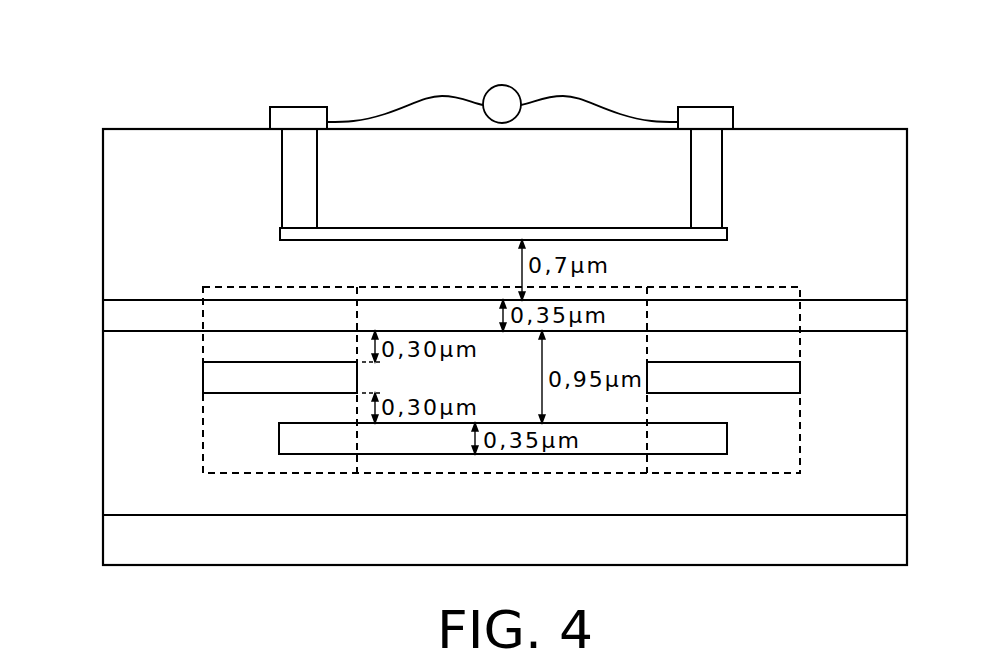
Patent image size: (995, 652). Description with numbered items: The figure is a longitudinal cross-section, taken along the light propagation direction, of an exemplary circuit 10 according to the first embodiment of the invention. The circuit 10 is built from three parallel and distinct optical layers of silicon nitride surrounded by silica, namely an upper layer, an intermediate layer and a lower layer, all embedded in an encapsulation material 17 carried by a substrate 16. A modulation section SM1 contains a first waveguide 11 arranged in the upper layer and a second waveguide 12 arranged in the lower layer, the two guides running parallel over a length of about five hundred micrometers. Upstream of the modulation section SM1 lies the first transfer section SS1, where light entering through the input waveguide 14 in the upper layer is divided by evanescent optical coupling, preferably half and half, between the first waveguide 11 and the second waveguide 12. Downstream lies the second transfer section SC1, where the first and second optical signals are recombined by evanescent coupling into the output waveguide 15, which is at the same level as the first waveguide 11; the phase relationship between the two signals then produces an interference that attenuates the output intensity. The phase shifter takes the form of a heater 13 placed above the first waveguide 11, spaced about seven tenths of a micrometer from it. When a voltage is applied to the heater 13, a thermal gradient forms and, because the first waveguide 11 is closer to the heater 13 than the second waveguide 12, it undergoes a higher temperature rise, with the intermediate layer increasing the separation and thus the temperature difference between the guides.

The circuit 10 is at (850, 96).
The first waveguide 11 is at (437, 313).
The second waveguide 12 is at (592, 443).
The heater 13 is at (416, 234).
The input waveguide 14 is at (148, 315).
The output waveguide 15 is at (890, 313).
The substrate 16 is at (203, 553).
The encapsulation material 17 is at (882, 474).
The first transfer section SS1 is at (215, 473).
The modulation section SM1 is at (402, 475).
The second transfer section SC1 is at (763, 473).